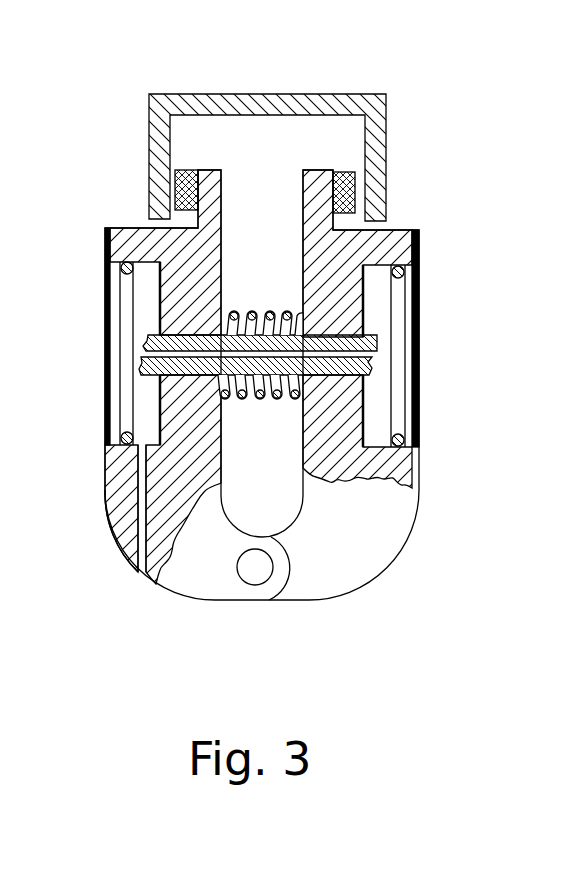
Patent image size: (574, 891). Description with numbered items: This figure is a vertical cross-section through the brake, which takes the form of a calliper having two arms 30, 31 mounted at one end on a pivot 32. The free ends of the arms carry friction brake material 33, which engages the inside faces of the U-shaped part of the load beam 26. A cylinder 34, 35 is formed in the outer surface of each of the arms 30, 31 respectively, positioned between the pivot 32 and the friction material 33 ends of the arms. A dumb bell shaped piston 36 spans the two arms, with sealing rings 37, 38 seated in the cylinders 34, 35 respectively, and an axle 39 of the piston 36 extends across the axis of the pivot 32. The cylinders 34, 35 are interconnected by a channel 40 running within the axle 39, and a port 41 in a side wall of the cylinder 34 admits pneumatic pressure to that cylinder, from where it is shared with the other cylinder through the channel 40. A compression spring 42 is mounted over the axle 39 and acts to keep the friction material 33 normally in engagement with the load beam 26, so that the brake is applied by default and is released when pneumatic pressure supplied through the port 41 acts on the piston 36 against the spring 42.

The load beam 26 is at (290, 94).
The calliper arm 30 is at (178, 585).
The calliper arm 31 is at (347, 573).
The pivot 32 is at (255, 578).
The friction brake material 33 is at (185, 175).
The cylinder 34 is at (148, 290).
The cylinder 35 is at (378, 290).
The dumb bell shaped piston 36 is at (423, 343).
The sealing ring 37 is at (122, 433).
The sealing ring 38 is at (400, 442).
The axle 39 is at (150, 338).
The channel 40 is at (150, 363).
The port 41 is at (160, 530).
The compression spring 42 is at (165, 486).